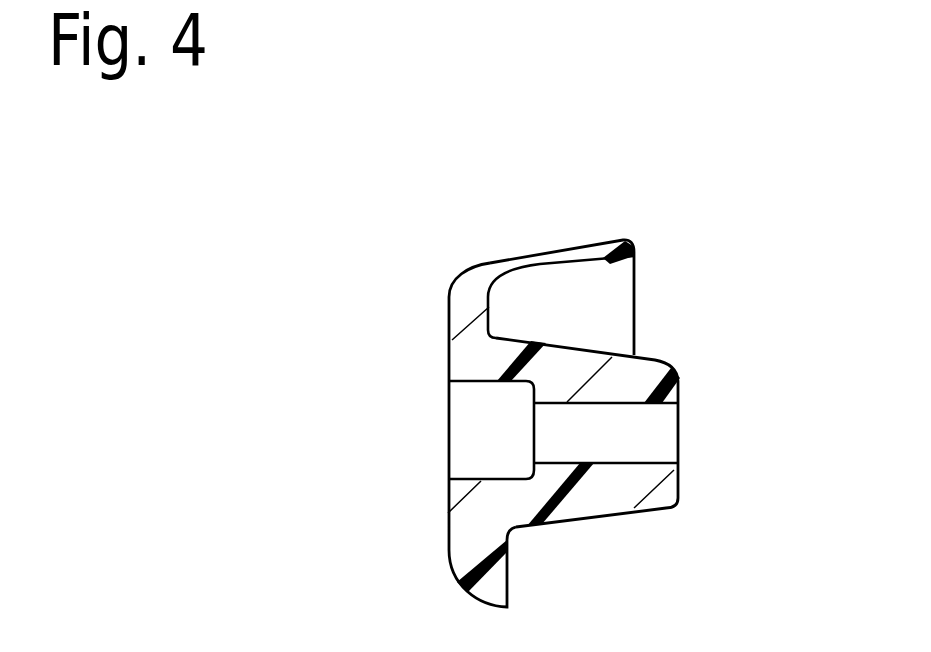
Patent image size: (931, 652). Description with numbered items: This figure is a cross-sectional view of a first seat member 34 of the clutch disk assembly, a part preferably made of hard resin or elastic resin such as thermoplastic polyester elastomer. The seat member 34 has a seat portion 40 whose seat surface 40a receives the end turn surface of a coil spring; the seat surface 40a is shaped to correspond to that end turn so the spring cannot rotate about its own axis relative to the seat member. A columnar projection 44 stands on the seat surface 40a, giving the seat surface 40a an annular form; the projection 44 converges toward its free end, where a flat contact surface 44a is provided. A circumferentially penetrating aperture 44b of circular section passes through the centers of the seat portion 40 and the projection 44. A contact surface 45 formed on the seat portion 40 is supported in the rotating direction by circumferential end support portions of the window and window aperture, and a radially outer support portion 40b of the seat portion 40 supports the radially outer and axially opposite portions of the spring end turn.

The seat member 34 is at (733, 275).
The seat portion 40 is at (458, 310).
The seat surface 40a is at (489, 307).
The radially outer support portion 40b is at (607, 293).
The columnar projection 44 is at (645, 372).
The flat contact surface 44a is at (681, 382).
The aperture 44b is at (640, 405).
The contact surface 45 is at (448, 367).